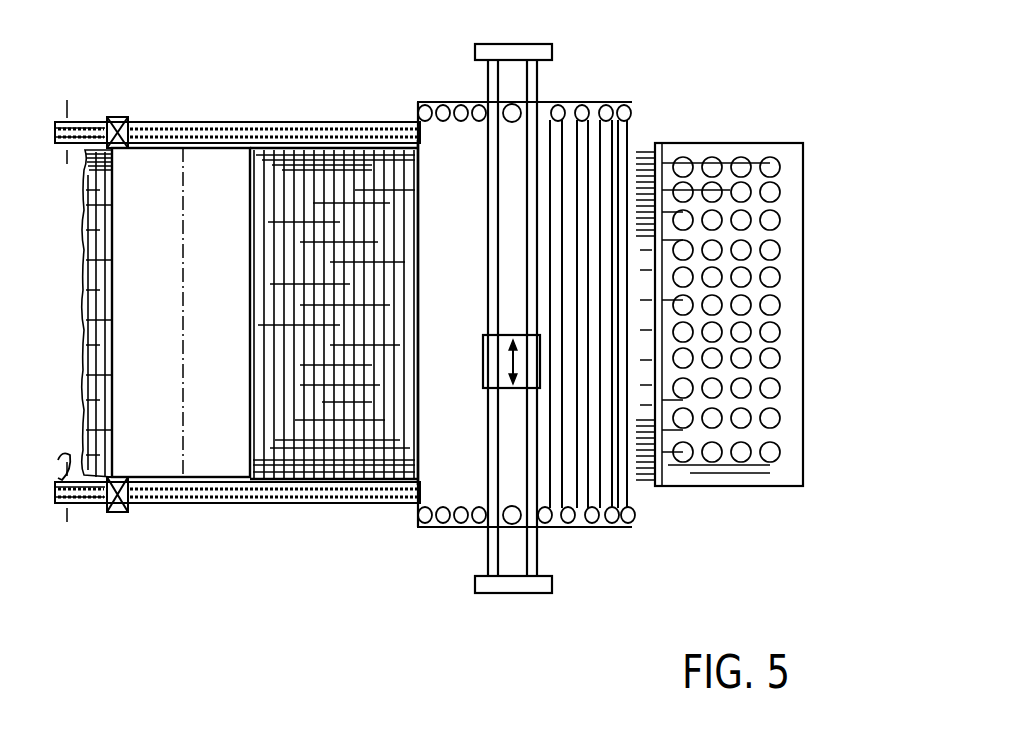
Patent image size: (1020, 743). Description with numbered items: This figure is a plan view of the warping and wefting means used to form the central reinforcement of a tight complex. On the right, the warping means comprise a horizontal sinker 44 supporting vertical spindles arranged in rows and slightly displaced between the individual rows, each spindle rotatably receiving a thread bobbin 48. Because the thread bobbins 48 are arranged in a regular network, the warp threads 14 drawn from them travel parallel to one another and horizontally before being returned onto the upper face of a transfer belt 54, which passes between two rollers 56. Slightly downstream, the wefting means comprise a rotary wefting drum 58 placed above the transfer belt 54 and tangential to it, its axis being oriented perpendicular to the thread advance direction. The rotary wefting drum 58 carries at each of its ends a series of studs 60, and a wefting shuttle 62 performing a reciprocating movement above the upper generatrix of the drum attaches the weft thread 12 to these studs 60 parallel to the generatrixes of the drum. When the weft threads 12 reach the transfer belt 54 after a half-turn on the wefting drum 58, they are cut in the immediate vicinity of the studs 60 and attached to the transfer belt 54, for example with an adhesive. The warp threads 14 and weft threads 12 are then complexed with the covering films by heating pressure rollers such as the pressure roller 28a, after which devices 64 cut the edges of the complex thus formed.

The weft thread 12 is at (616, 196).
The warp thread 14 is at (640, 487).
The pressure roller 28a is at (143, 195).
The horizontal sinker 44 is at (734, 311).
The thread bobbin 48 is at (742, 457).
The transfer belt 54 is at (257, 126).
The roller 56 is at (92, 450).
The rotary wefting drum 58 is at (467, 165).
The stud 60 is at (555, 105).
The wefting shuttle 62 is at (495, 358).
The cutting device 64 is at (122, 122).